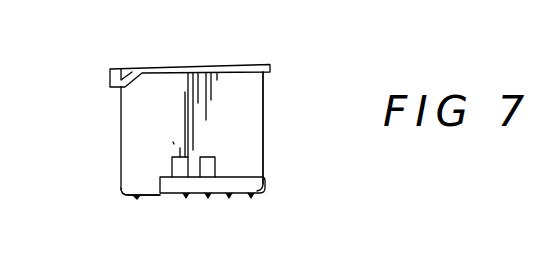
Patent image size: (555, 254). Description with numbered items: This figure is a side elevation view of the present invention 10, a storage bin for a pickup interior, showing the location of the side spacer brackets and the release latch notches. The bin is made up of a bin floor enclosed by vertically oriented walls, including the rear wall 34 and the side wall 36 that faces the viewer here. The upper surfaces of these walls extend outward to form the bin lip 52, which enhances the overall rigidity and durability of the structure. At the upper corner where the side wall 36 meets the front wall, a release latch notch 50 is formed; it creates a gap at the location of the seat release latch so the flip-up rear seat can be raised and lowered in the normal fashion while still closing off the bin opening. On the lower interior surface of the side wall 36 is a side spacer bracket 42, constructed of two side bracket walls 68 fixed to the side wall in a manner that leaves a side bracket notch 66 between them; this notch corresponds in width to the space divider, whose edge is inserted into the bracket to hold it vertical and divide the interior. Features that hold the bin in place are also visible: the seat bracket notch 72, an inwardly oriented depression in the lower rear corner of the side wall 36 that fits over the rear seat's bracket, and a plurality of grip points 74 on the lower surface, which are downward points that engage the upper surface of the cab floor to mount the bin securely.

The present invention 10 is at (298, 82).
The rear wall 34 is at (265, 145).
The side wall 36 is at (137, 122).
The side spacer bracket 42 is at (163, 199).
The release latch notch 50 is at (109, 78).
The bin lip 52 is at (209, 64).
The side bracket notch 66 is at (192, 197).
The side bracket wall 68 is at (208, 178).
The seat bracket notch 72 is at (265, 183).
The grip point 74 is at (237, 198).